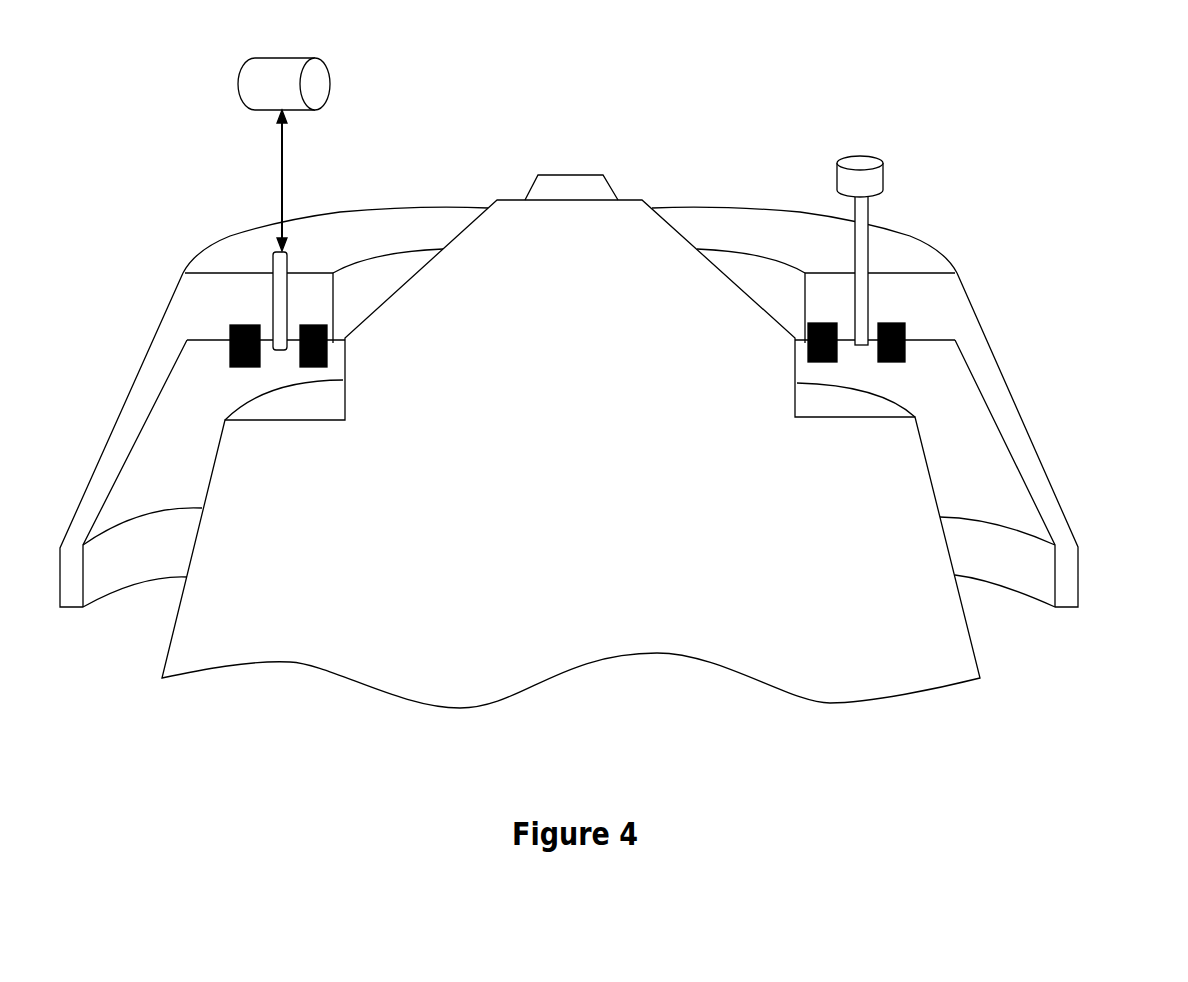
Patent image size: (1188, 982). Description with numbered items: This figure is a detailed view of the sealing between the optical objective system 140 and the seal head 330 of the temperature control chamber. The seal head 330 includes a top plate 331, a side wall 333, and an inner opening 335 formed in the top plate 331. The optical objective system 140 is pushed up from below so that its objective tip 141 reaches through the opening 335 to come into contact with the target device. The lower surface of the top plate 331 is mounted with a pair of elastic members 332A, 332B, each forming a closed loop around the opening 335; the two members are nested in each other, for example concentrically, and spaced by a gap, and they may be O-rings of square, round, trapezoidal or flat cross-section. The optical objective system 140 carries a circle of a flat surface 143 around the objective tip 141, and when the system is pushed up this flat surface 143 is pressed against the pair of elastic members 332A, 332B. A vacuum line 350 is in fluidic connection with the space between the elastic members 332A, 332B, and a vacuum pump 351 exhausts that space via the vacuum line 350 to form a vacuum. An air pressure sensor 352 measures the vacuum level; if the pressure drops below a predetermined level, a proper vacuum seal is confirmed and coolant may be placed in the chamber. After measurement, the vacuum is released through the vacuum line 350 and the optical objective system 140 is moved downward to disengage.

The optical objective system 140 is at (590, 551).
The objective tip 141 is at (580, 183).
The flat surface 143 is at (277, 406).
The seal head 330 is at (1005, 392).
The top plate 331 is at (415, 222).
The elastic member 332A is at (833, 320).
The elastic member 332B is at (222, 316).
The side wall 333 is at (1036, 450).
The inner opening 335 is at (747, 273).
The vacuum line 350 is at (272, 240).
The vacuum pump 351 is at (318, 78).
The air pressure sensor 352 is at (862, 156).